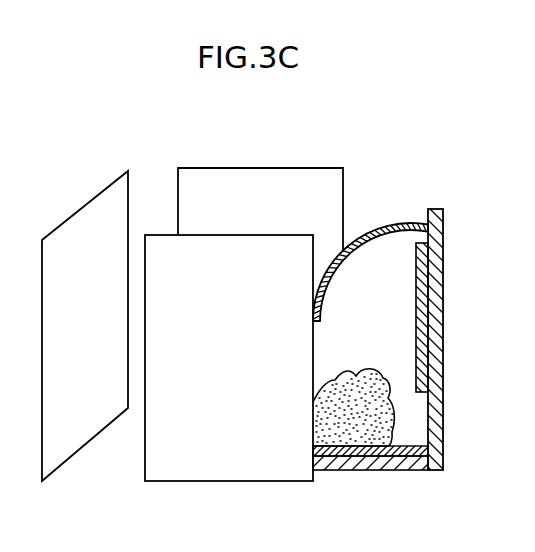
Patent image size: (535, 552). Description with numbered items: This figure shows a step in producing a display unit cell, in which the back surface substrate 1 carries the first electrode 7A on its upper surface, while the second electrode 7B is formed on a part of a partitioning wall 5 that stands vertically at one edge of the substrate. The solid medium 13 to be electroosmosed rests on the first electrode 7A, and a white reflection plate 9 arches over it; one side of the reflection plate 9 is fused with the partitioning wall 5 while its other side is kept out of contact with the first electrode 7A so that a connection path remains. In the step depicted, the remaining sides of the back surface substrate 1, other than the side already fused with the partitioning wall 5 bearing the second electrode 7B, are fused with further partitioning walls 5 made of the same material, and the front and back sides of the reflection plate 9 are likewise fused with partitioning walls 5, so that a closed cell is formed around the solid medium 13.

The back surface substrate 1 is at (366, 462).
The partitioning wall 5 is at (68, 246).
The first electrode 7A is at (326, 460).
The second electrode 7B is at (420, 282).
The white reflection plate 9 is at (408, 222).
The solid medium 13 is at (378, 409).